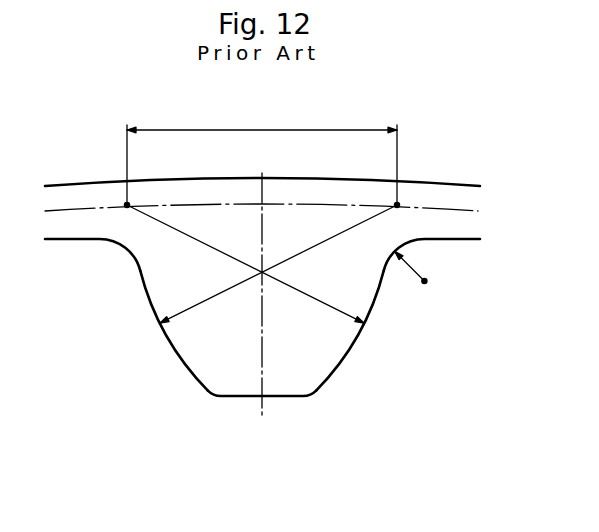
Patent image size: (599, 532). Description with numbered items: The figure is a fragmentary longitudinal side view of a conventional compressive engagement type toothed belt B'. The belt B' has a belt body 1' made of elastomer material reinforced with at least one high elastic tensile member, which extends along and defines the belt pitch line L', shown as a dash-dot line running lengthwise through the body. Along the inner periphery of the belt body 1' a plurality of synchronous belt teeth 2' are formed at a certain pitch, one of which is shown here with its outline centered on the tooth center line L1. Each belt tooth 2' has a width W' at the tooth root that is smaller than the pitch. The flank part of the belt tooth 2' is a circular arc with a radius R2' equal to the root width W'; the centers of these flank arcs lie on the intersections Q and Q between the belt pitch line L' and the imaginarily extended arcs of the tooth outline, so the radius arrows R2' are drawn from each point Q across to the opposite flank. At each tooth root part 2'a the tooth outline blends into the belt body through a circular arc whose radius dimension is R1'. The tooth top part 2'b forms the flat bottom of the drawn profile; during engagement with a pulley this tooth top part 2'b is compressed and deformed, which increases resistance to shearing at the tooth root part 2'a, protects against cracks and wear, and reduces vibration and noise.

The belt B' is at (75, 88).
The belt body 1' is at (262, 151).
The belt pitch line L' is at (289, 188).
The synchronous belt tooth 2' is at (256, 337).
The tooth root part 2'a is at (262, 286).
The tooth top part 2'b is at (279, 423).
The tooth center line L1 is at (263, 409).
The width at tooth root W' is at (262, 155).
The intersection Q is at (261, 218).
The flank arc radius R2' is at (262, 264).
The tooth root arc radius R1' is at (412, 260).